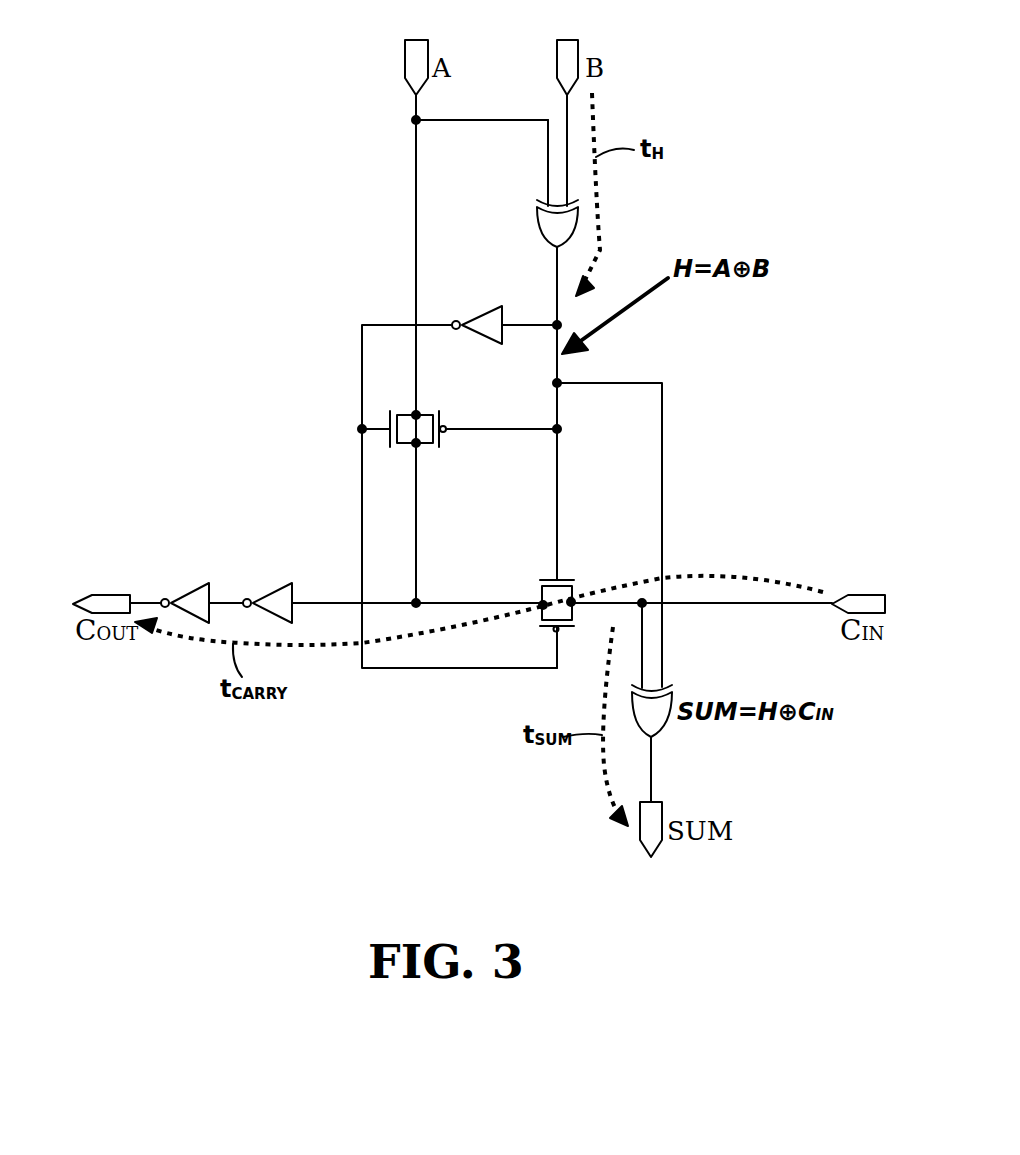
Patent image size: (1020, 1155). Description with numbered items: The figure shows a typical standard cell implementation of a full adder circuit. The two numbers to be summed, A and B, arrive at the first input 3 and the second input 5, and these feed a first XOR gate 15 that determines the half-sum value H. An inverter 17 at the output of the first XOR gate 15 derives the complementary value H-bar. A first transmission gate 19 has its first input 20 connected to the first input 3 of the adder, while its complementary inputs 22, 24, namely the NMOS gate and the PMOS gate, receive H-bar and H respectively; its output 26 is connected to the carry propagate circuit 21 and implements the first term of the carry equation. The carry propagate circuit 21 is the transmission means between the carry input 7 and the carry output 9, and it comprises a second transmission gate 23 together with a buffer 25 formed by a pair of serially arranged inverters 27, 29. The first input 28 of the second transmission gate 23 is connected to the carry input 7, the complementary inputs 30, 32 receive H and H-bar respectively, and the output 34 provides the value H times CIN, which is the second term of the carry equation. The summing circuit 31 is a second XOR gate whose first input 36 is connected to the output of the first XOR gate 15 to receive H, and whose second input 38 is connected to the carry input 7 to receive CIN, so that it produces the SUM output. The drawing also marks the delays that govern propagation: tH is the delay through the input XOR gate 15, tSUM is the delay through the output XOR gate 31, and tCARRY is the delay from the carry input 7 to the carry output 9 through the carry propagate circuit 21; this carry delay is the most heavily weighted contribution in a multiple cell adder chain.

The first input 3 is at (416, 120).
The second input 5 is at (592, 91).
The carry input 7 is at (867, 597).
The carry output 9 is at (120, 595).
The first XOR gate 15 is at (550, 229).
The inverter 17 is at (480, 320).
The first transmission gate 19 is at (431, 431).
The first input of the first transmission gate 20 is at (415, 415).
The carry propagate circuit 21 is at (748, 600).
The complementary input (NMOS gate) of first transmission gate 22 is at (390, 428).
The second transmission gate 23 is at (543, 603).
The complementary input (PMOS gate) of first transmission gate 24 is at (442, 427).
The buffer 25 is at (341, 578).
The output of the first transmission gate 26 is at (417, 445).
The first inverter of buffer 27 is at (188, 597).
The first input of the second transmission gate 28 is at (572, 602).
The second inverter of buffer 29 is at (282, 590).
The complementary input of second transmission gate 30 is at (557, 578).
The summing circuit (second XOR gate) 31 is at (687, 702).
The complementary input of second transmission gate 32 is at (560, 628).
The output of the second transmission gate 34 is at (542, 605).
The first input of the second XOR gate 36 is at (658, 685).
The second input of the second XOR gate 38 is at (640, 683).